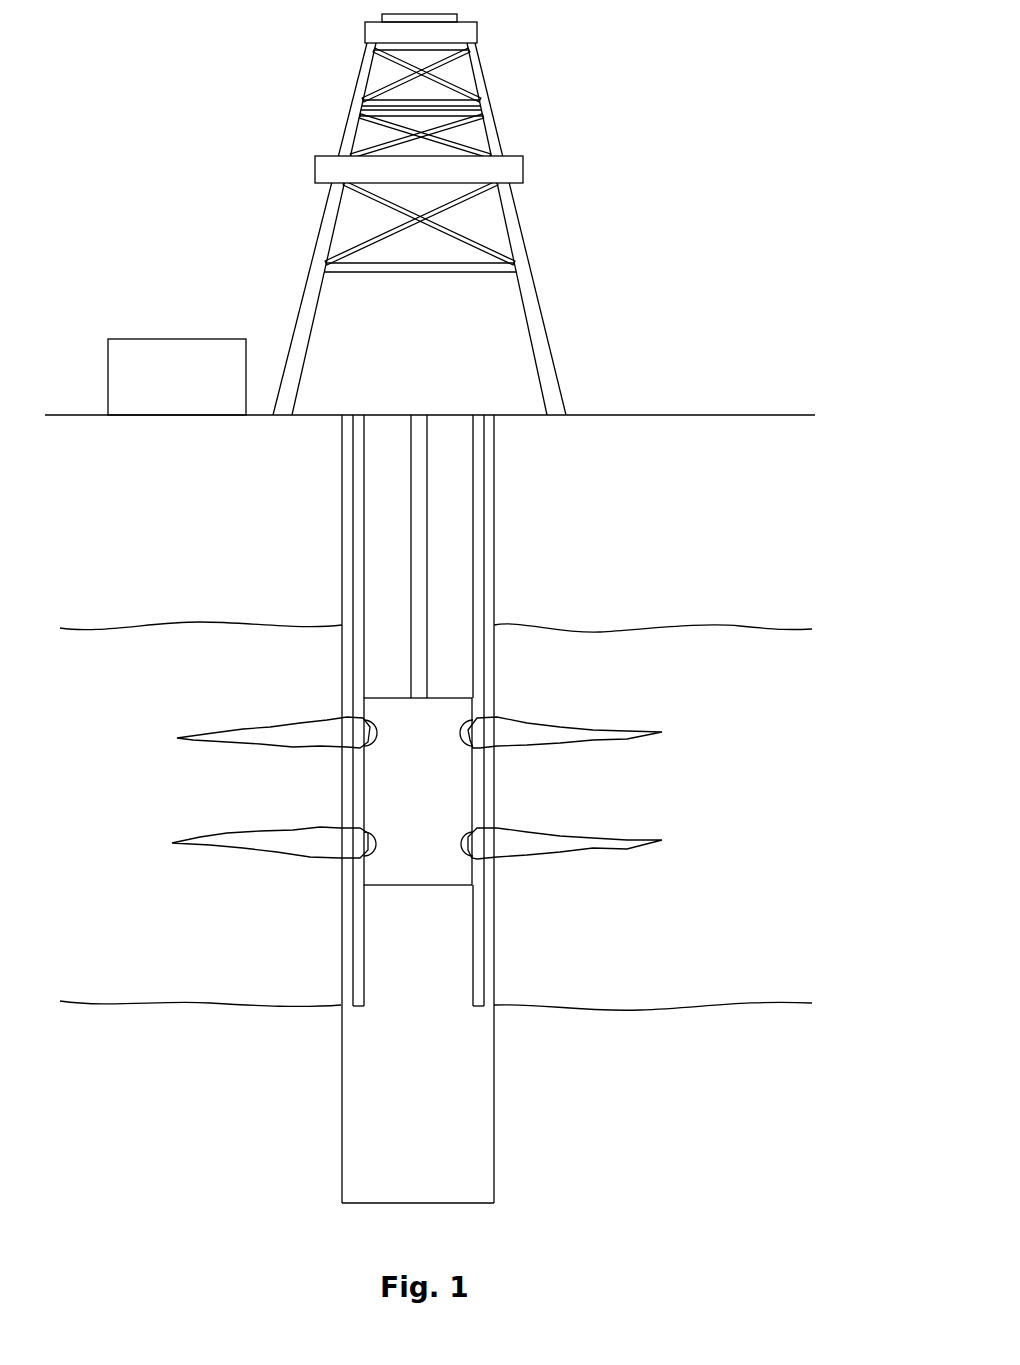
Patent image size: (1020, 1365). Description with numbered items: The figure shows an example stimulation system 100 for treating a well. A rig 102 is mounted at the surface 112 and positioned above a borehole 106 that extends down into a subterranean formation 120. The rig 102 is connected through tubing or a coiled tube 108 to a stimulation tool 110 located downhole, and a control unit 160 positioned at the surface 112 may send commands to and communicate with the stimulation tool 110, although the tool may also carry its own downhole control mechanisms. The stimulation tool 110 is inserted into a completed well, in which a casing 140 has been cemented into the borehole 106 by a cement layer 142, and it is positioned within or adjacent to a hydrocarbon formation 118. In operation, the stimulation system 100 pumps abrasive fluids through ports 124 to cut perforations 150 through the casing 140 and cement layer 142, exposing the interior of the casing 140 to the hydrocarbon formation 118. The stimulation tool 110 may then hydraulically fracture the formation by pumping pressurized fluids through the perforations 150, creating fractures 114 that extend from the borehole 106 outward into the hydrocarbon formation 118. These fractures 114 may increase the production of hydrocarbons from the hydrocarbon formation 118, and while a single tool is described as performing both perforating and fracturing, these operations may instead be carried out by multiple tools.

The stimulation system 100 is at (694, 120).
The rig 102 is at (499, 142).
The borehole 106 is at (497, 542).
The coiled tube 108 is at (422, 502).
The stimulation tool 110 is at (420, 870).
The surface 112 is at (640, 415).
The fractures 114 is at (213, 743).
The hydrocarbon formation 118 is at (771, 898).
The subterranean formation 120 is at (771, 531).
The ports 124 is at (363, 835).
The casing 140 is at (360, 497).
The cement layer 142 is at (347, 558).
The perforations 150 is at (492, 827).
The control unit 160 is at (192, 389).